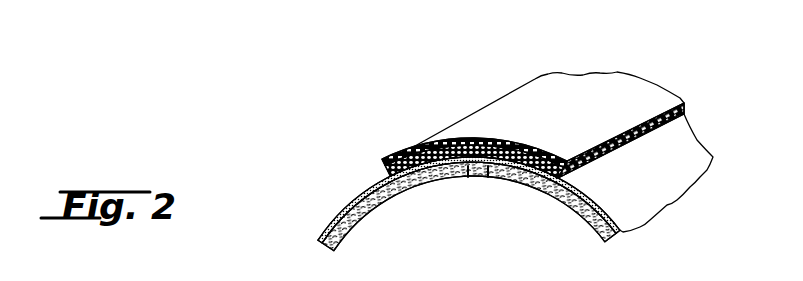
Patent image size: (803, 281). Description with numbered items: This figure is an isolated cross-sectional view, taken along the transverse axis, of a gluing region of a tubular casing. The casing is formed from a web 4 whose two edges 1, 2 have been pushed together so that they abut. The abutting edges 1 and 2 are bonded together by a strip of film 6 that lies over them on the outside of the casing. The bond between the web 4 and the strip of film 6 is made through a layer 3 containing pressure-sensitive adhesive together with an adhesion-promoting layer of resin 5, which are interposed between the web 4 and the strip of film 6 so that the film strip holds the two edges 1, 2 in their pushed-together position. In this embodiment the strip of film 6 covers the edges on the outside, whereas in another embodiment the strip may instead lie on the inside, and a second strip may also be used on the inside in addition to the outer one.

The edge 1 is at (476, 180).
The edge 2 is at (482, 182).
The layer containing pressure-sensitive adhesive 3 is at (482, 158).
The web 4 is at (398, 194).
The adhesion-promoting layer of resin 5 is at (333, 220).
The strip of film 6 is at (546, 146).